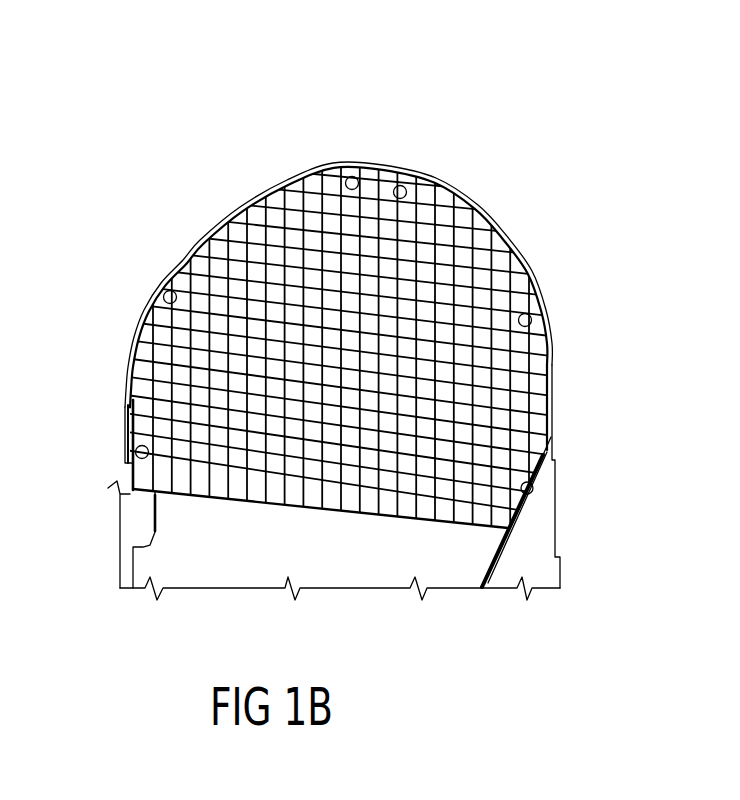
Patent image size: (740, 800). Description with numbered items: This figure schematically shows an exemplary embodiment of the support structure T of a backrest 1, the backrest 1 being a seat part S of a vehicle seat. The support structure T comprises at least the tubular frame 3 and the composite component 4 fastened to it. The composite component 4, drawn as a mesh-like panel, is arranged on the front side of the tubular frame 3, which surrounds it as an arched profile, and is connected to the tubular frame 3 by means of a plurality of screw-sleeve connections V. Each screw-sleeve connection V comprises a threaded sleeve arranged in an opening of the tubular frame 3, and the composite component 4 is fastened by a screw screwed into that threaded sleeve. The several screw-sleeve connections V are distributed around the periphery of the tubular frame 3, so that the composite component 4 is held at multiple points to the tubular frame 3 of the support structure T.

The seat part S is at (236, 101).
The support structure T is at (504, 200).
The backrest 1 is at (348, 338).
The tubular frame 3 is at (553, 363).
The composite component 4 is at (248, 208).
The screw-sleeve connection V is at (165, 291).